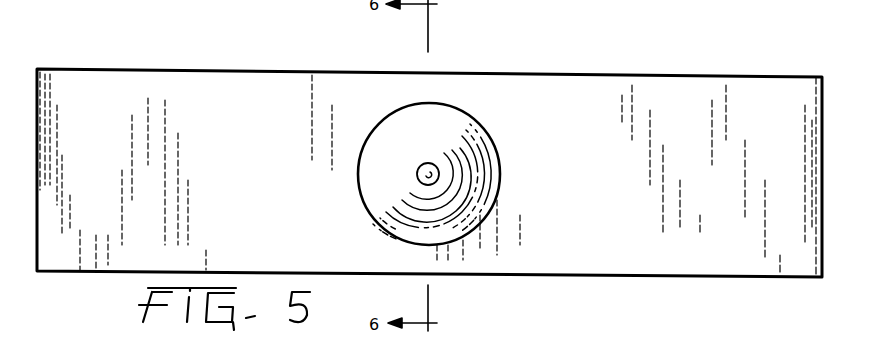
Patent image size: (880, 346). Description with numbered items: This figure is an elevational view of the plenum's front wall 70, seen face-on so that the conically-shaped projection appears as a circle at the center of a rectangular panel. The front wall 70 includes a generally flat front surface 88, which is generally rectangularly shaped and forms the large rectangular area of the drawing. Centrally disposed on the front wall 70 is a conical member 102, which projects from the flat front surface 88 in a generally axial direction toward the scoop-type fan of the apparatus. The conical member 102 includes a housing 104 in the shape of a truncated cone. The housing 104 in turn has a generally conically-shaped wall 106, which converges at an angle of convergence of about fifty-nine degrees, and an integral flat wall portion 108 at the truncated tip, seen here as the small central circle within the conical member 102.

The front wall 70 is at (620, 244).
The flat front surface 88 is at (769, 133).
The conical member 102 is at (497, 140).
The housing 104 is at (472, 192).
The conically-shaped wall 106 is at (405, 136).
The flat wall portion 108 is at (428, 174).